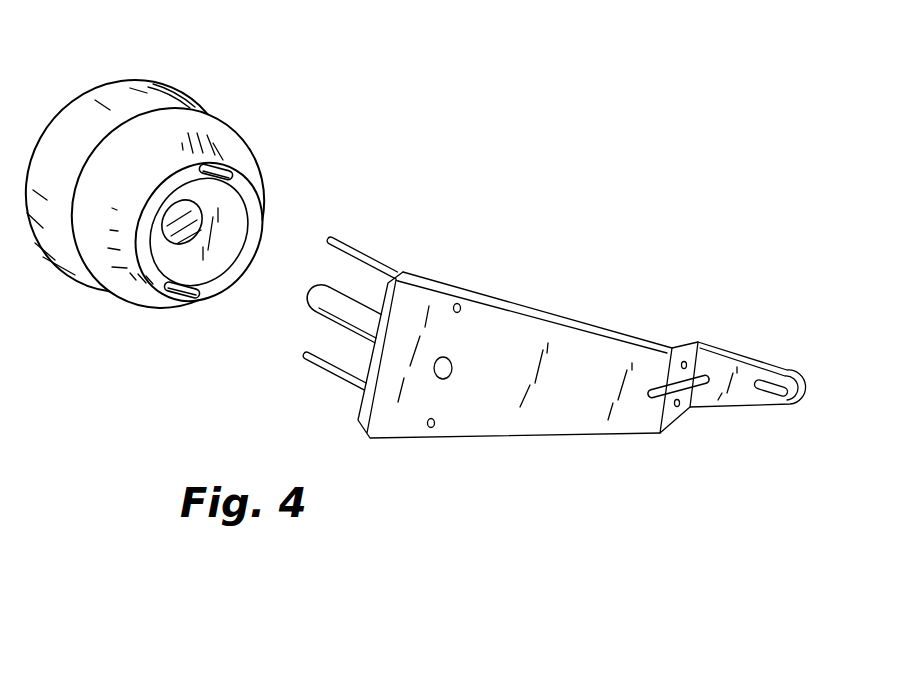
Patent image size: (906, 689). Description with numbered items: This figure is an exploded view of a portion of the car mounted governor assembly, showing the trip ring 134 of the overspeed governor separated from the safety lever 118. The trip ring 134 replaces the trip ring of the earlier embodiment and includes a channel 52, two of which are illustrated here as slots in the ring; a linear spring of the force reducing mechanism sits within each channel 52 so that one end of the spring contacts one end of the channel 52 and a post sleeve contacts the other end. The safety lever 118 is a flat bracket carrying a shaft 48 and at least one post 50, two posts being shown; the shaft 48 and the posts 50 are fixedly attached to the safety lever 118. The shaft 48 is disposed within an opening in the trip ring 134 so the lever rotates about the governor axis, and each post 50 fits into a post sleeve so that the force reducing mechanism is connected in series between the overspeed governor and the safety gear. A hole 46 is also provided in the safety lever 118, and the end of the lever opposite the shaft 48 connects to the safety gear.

The trip ring 134 is at (168, 86).
The channel 52 is at (226, 158).
The shaft 48 is at (312, 297).
The post 50 is at (372, 253).
The hole 46 is at (430, 428).
The safety lever 118 is at (546, 442).